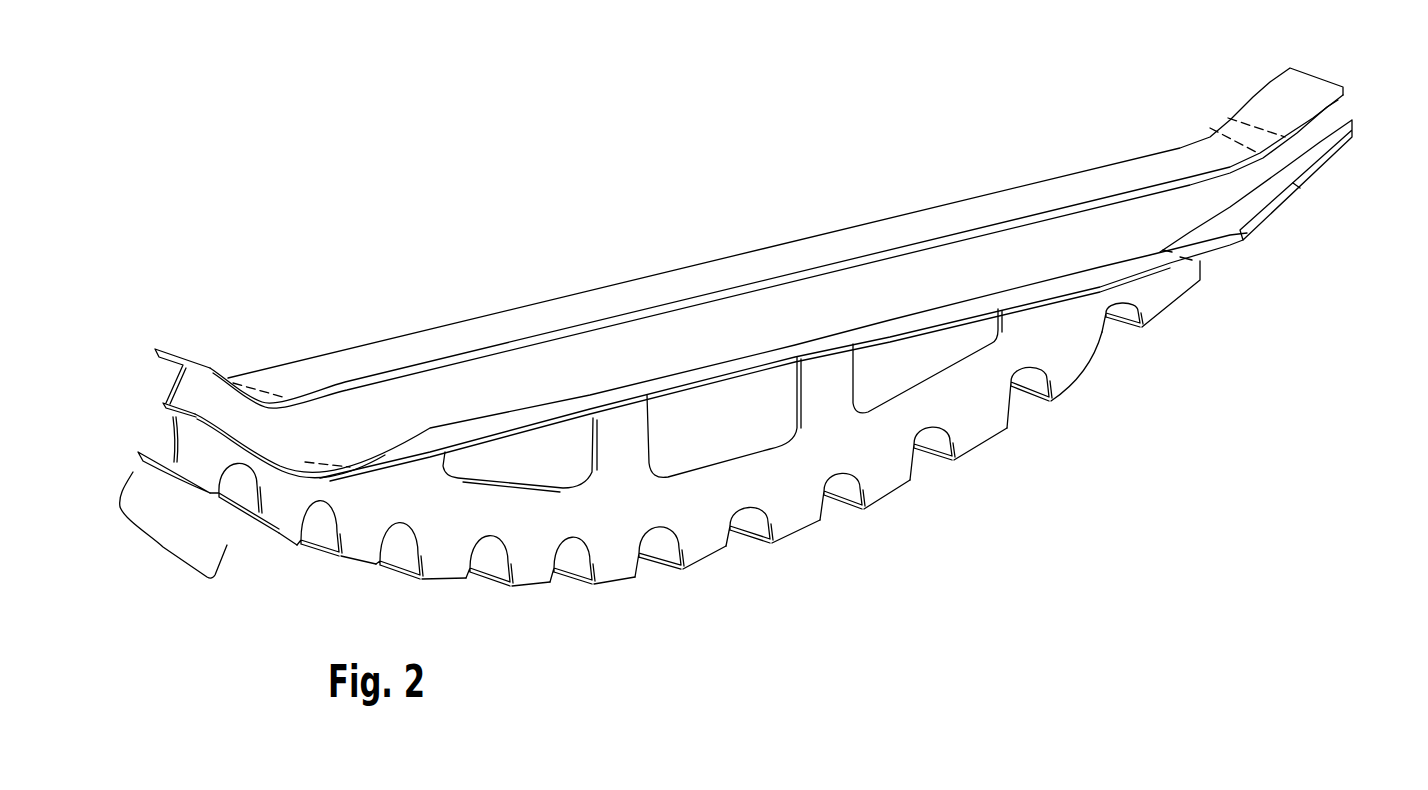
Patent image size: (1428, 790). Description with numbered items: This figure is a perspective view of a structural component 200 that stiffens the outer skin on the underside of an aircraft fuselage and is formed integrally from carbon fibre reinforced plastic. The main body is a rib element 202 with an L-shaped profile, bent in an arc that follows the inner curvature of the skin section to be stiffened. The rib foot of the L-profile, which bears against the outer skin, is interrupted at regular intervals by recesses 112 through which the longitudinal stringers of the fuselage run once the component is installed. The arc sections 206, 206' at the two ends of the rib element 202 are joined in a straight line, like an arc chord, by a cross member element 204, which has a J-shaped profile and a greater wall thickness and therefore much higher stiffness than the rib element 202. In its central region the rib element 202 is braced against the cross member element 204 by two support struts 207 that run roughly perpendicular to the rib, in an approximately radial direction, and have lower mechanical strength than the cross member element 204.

The structural component 200 is at (412, 194).
The cross member element 204 is at (755, 266).
The rib element 202 is at (896, 512).
The support struts 207 is at (811, 388).
The recesses 112 is at (1110, 323).
The arc section 206 is at (163, 532).
The arc section 206' is at (1282, 190).